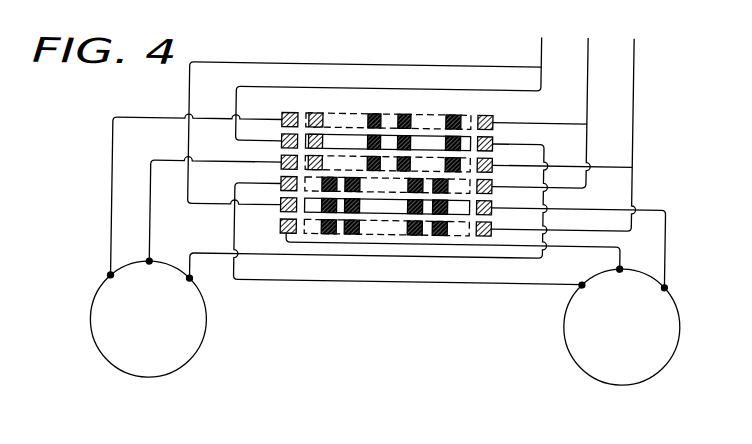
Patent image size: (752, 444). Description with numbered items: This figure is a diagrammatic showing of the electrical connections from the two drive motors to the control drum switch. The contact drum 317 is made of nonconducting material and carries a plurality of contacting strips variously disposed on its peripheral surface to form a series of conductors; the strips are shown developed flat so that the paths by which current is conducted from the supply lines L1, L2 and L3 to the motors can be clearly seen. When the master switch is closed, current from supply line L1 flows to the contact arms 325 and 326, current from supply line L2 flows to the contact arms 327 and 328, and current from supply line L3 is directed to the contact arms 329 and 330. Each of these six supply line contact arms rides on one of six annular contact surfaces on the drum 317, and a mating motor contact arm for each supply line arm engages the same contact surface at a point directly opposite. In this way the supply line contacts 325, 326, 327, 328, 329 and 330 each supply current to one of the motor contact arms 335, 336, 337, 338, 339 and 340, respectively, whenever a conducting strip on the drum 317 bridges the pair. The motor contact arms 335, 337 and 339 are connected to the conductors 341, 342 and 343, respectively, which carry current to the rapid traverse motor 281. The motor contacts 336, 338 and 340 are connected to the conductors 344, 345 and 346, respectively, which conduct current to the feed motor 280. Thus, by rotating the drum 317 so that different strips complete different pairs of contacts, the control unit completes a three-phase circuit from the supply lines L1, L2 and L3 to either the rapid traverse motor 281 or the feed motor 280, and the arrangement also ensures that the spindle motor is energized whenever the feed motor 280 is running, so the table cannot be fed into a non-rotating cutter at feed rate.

The contact drum 317 is at (396, 114).
The motor contact arm 339 is at (289, 114).
The contact arm 325 is at (281, 145).
The motor contact arm 337 is at (281, 169).
The motor contact arm 340 is at (281, 190).
The contact arm 326 is at (281, 227).
The motor contact arm 338 is at (285, 238).
The contact arm 329 is at (491, 114).
The motor contact arm 335 is at (494, 143).
The contact arm 327 is at (493, 164).
The contact arm 330 is at (493, 187).
The motor contact arm 336 is at (493, 208).
The contact arm 328 is at (493, 229).
The conductor 341 is at (545, 148).
The conductor 342 is at (160, 155).
The conductor 343 is at (150, 119).
The conductor 344 is at (612, 206).
The conductor 345 is at (548, 248).
The conductor 346 is at (222, 193).
The supply line L1 is at (539, 55).
The supply line L2 is at (631, 60).
The supply line L3 is at (585, 75).
The rapid traverse motor 281 is at (110, 364).
The feed motor 280 is at (662, 366).